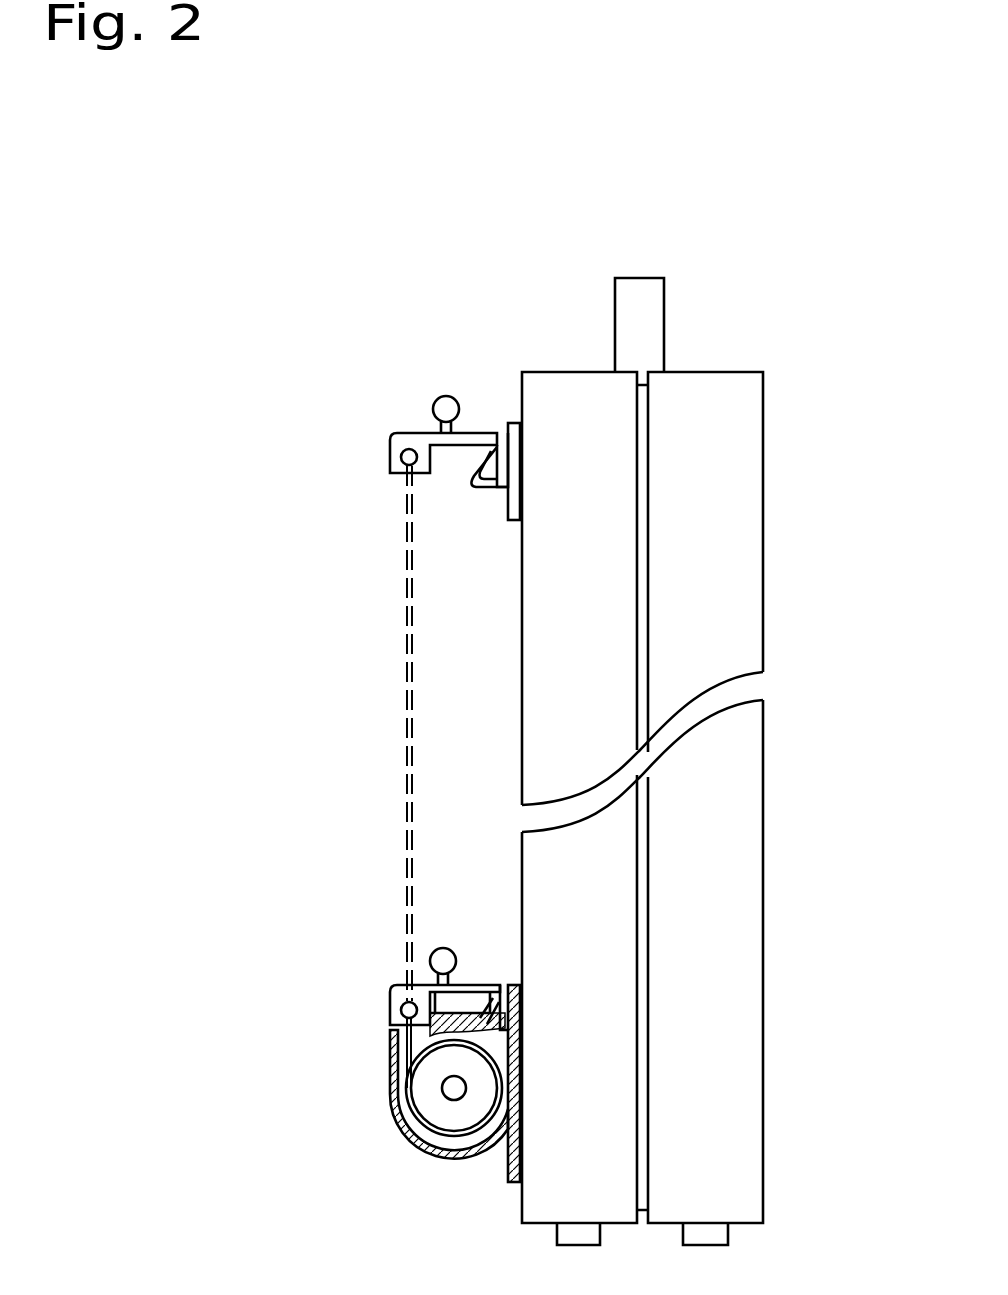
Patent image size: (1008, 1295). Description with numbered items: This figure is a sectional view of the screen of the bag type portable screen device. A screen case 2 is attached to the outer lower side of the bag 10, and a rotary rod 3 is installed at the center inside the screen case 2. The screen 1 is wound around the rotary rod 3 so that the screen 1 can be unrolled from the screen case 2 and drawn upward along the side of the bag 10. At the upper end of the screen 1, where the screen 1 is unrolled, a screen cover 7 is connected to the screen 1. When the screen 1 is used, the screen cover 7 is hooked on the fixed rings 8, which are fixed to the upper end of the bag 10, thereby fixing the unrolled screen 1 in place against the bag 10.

The screen 1 is at (407, 735).
The screen case 2 is at (425, 1153).
The rotary rod 3 is at (422, 1092).
The screen cover 7 is at (390, 448).
The fixed rings 8 is at (488, 485).
The bag 10 is at (727, 1030).